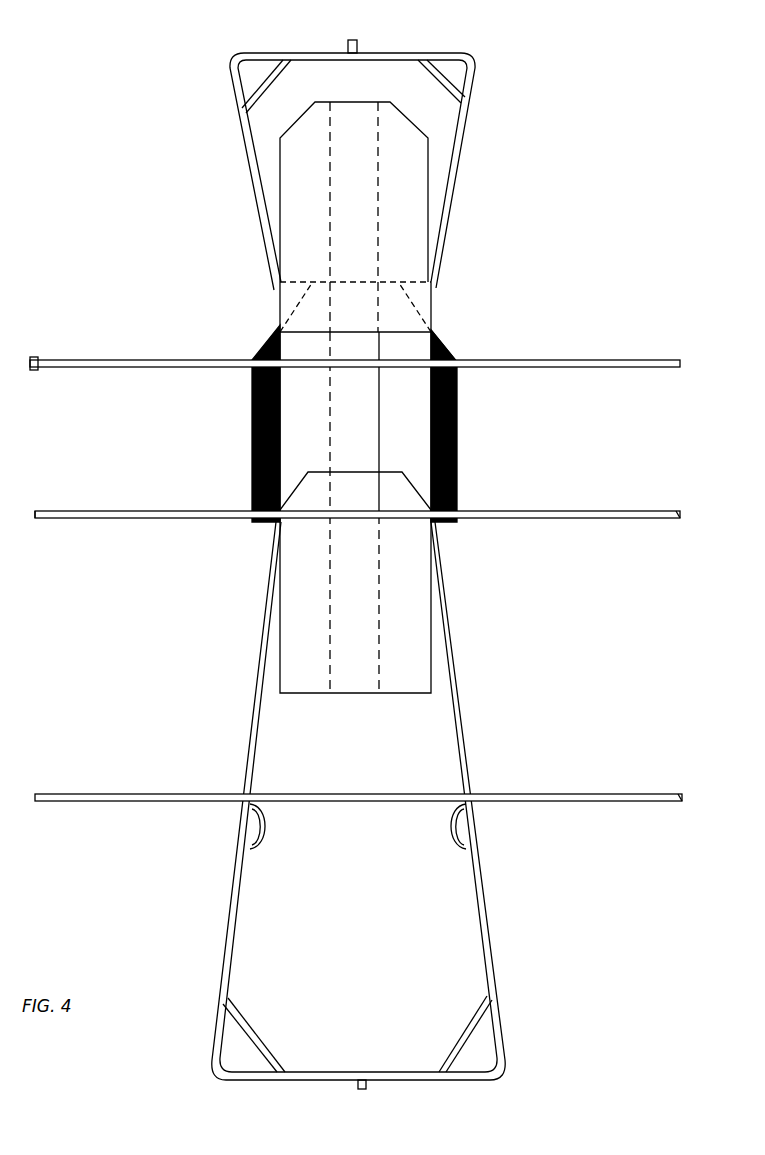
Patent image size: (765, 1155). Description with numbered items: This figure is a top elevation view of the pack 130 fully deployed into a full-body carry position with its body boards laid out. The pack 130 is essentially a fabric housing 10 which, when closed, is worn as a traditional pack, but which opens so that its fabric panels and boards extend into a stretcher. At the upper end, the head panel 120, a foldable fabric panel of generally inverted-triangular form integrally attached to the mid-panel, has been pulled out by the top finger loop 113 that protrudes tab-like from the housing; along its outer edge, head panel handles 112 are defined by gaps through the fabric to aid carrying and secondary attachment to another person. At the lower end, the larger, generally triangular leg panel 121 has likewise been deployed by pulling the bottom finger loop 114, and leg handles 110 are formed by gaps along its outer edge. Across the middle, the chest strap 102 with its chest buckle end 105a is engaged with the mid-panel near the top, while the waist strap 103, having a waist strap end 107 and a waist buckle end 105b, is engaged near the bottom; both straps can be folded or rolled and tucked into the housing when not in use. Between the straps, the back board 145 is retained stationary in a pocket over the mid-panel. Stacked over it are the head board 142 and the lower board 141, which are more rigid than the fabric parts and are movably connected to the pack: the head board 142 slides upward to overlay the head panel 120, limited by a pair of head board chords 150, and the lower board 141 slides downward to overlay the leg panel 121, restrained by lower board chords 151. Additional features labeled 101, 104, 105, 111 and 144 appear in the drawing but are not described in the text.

The fabric housing 10 is at (441, 341).
The tubular frame 101 is at (334, 566).
The chest strap 102 is at (509, 360).
The waist strap 103 is at (528, 511).
The third transverse rod 104 is at (509, 794).
The rod end 105 is at (680, 792).
The chest buckle end 105a is at (36, 357).
The waist buckle end 105b is at (679, 509).
The waist strap end 107 is at (68, 519).
The leg handles 110 is at (460, 828).
The lower corner brace 111 is at (486, 1050).
The head panel handles 112 is at (457, 75).
The top finger loop 113 is at (356, 50).
The bottom finger loop 114 is at (364, 1088).
The head panel 120 is at (266, 129).
The leg panel 121 is at (316, 922).
The pack 130 is at (253, 412).
The lower board 141 is at (343, 652).
The head board 142 is at (329, 253).
The center line of central bar 144 is at (384, 372).
The back board 145 is at (333, 452).
The head board chords 150 is at (381, 262).
The lower board chords 151 is at (383, 600).